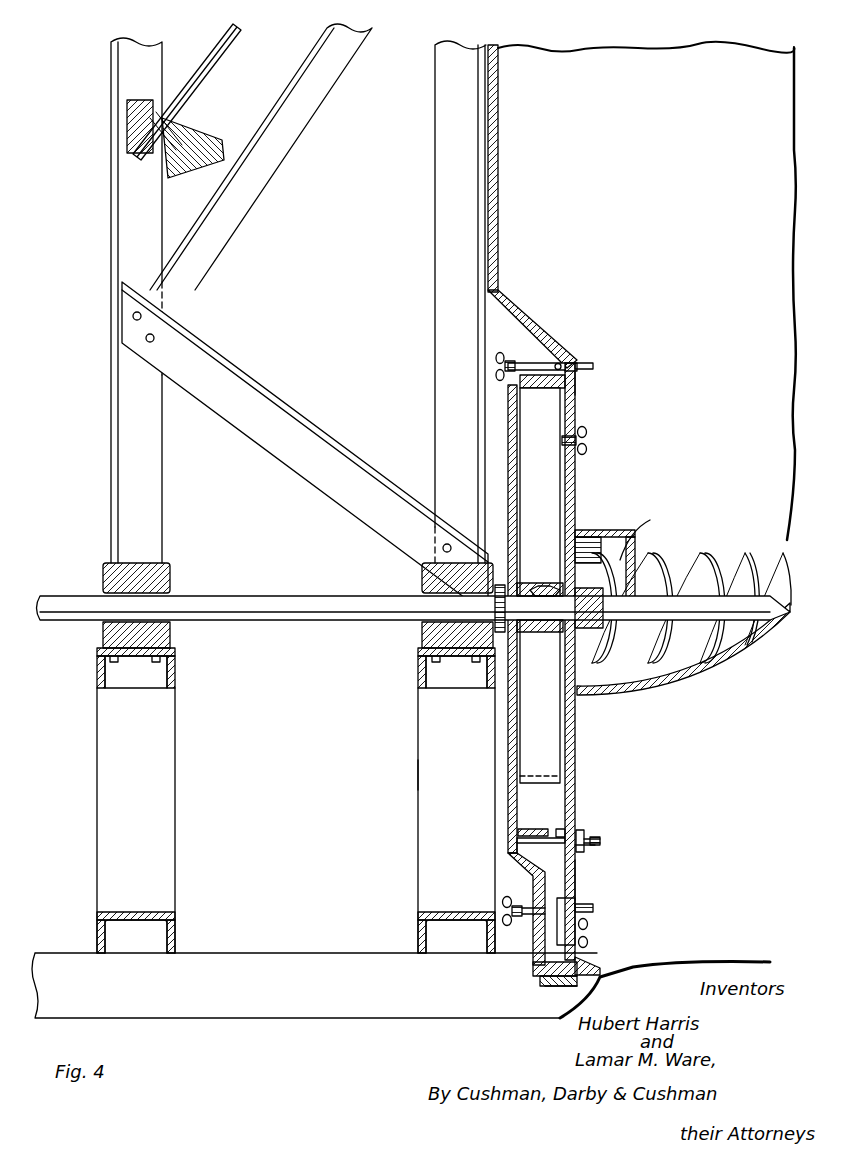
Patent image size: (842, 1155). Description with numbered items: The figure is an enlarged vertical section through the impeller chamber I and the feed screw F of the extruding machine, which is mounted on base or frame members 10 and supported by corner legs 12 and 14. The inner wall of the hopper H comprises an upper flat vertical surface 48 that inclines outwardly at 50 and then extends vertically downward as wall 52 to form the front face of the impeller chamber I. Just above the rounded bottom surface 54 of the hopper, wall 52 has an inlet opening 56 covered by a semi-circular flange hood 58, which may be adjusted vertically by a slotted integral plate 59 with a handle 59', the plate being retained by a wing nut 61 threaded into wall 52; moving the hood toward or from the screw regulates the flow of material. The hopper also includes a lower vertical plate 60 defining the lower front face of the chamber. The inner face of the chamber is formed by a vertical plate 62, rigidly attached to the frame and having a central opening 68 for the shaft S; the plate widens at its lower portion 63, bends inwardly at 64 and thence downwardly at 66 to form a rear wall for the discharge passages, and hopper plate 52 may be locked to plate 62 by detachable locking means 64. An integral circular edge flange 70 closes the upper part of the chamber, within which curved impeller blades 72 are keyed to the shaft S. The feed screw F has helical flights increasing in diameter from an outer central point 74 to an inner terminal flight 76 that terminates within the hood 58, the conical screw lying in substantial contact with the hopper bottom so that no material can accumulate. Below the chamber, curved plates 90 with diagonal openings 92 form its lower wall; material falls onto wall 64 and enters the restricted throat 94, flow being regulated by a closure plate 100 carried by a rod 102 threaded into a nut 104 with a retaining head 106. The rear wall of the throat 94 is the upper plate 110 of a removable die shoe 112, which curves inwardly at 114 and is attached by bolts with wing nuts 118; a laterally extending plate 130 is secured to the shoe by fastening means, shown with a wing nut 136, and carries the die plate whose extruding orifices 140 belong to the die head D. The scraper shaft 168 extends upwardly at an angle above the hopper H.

The base or frame members 10 is at (244, 962).
The corner leg 12 is at (440, 364).
The corner leg 14 is at (160, 505).
The upper flat vertical surface 48 is at (500, 184).
The outwardly inclined portion 50 is at (524, 318).
The upper vertical wall 52 is at (580, 366).
The rounded bottom surface 54 is at (663, 680).
The inlet opening 56 is at (580, 530).
The flange hood 58 is at (630, 537).
The slotted integral plate 59 is at (613, 383).
The handle 59' is at (611, 364).
The lower vertical plate 60 is at (577, 770).
The wing nut 61 is at (590, 438).
The vertical plate 62 is at (510, 453).
The lower portion of plate 63 is at (508, 772).
The inwardly bent portion 64 is at (538, 360).
The downwardly extending portion 66 is at (528, 952).
The opening 68 is at (512, 580).
The edge flange or wall 70 is at (514, 378).
The impeller blades 72 is at (552, 482).
The outer central point 74 is at (772, 595).
The inner terminal flight 76 is at (625, 560).
The curved plates 90 is at (534, 828).
The diagonal openings 92 is at (566, 830).
The restricted throat portion 94 is at (576, 878).
The adjustable closure plate 100 is at (516, 838).
The rod 102 is at (516, 850).
The nut 104 is at (598, 846).
The head 106 is at (590, 838).
The upper plate 110 is at (560, 893).
The die shoe 112 is at (542, 966).
The inwardly curved lower end 114 is at (556, 990).
The wing nuts 118 is at (503, 907).
The laterally extending plate 130 is at (593, 908).
The wing nut 136 is at (588, 934).
The extruding orifices 140 is at (577, 975).
The scraper shaft 168 is at (205, 68).
The shaft S is at (258, 596).
The hopper H is at (678, 60).
The feed screw F is at (654, 537).
The impeller chamber I is at (558, 397).
The die head D is at (600, 966).